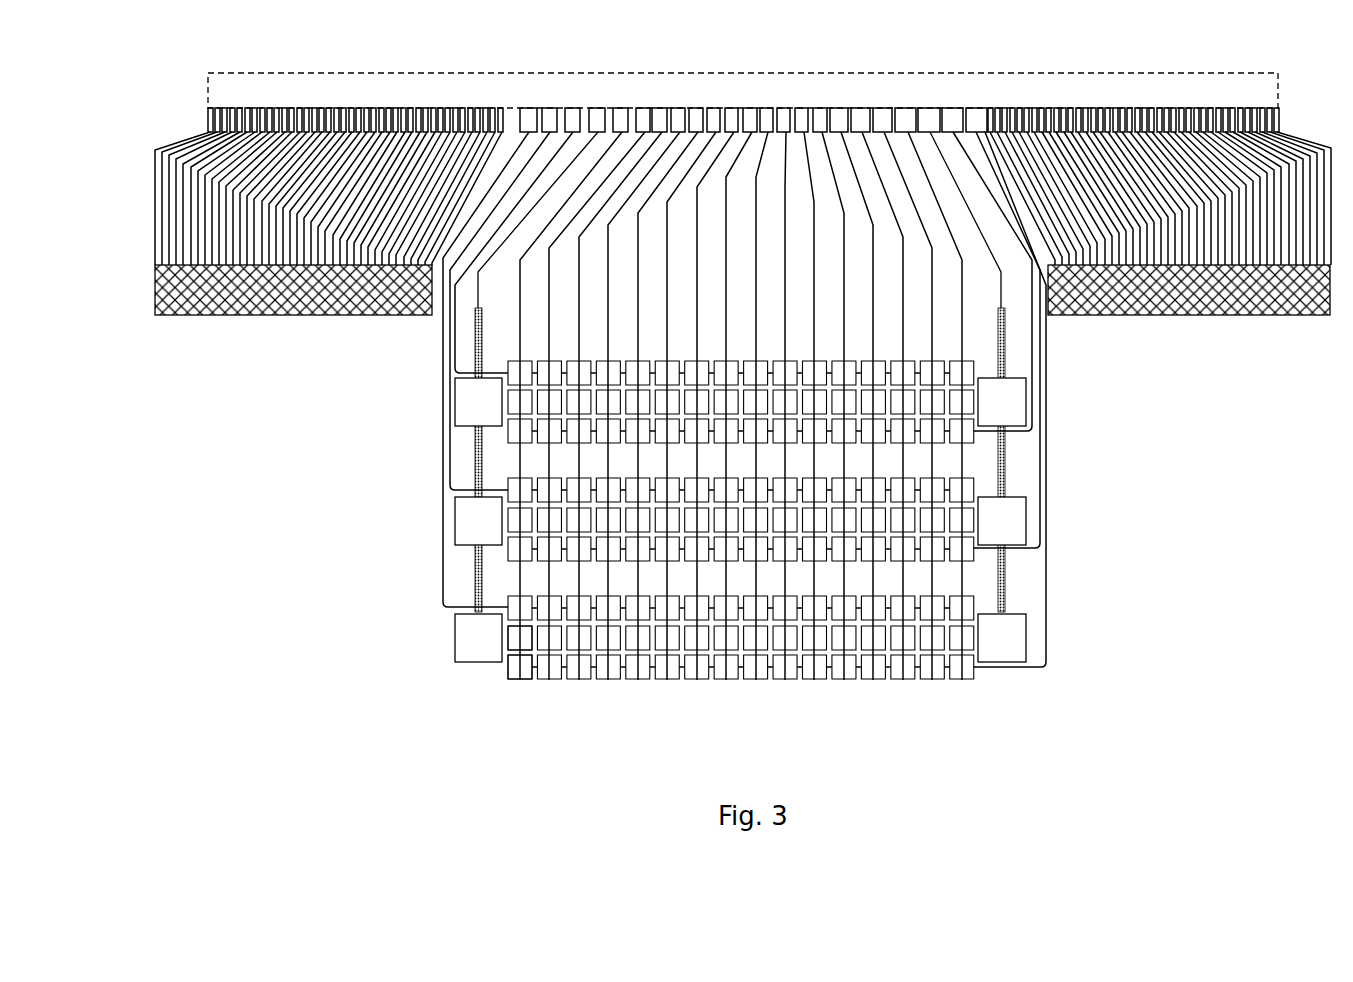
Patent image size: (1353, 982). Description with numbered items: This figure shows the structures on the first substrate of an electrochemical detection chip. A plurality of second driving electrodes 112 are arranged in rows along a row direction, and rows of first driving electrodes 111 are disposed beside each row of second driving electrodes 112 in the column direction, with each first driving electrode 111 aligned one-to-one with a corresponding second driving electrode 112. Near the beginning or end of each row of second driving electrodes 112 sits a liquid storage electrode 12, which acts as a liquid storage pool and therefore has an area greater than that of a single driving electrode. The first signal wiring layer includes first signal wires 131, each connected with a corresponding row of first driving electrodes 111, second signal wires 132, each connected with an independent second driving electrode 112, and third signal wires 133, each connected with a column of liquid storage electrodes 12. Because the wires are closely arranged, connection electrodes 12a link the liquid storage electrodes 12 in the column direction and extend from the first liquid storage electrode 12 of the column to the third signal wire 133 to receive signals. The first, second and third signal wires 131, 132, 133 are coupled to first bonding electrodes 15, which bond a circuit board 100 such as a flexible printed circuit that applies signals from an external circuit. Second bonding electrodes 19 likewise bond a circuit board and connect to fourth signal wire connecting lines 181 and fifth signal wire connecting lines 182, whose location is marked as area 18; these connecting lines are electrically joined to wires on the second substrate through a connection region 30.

The circuit board 100 is at (827, 92).
The second bonding electrode 19 is at (420, 108).
The first bonding electrode 15 is at (731, 120).
The area of signal wire connecting lines 18 is at (183, 218).
The fourth signal wire connecting line 181 is at (185, 147).
The fifth signal wire connecting line 182 is at (183, 176).
The connection region 30 is at (296, 292).
The third signal wire 133 is at (478, 282).
The connection electrode 12a is at (477, 574).
The second signal wire 132 is at (518, 460).
The first signal wire 131 is at (443, 595).
The liquid storage electrode 12 is at (475, 637).
The second driving electrode 112 is at (519, 638).
The first driving electrode 111 is at (520, 670).